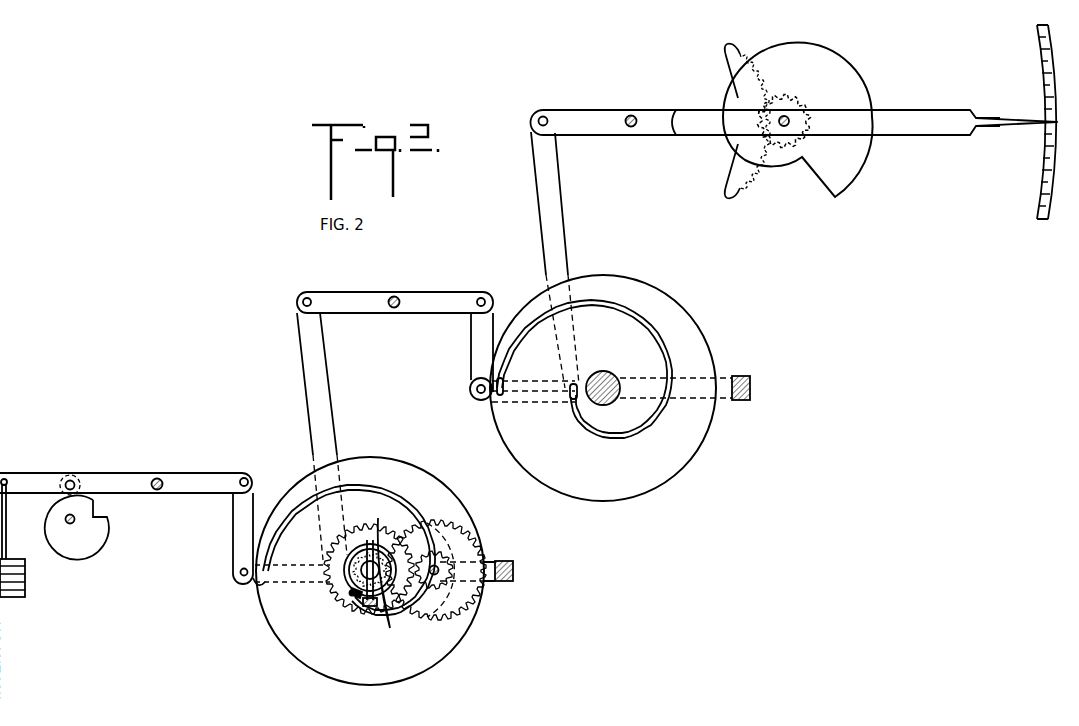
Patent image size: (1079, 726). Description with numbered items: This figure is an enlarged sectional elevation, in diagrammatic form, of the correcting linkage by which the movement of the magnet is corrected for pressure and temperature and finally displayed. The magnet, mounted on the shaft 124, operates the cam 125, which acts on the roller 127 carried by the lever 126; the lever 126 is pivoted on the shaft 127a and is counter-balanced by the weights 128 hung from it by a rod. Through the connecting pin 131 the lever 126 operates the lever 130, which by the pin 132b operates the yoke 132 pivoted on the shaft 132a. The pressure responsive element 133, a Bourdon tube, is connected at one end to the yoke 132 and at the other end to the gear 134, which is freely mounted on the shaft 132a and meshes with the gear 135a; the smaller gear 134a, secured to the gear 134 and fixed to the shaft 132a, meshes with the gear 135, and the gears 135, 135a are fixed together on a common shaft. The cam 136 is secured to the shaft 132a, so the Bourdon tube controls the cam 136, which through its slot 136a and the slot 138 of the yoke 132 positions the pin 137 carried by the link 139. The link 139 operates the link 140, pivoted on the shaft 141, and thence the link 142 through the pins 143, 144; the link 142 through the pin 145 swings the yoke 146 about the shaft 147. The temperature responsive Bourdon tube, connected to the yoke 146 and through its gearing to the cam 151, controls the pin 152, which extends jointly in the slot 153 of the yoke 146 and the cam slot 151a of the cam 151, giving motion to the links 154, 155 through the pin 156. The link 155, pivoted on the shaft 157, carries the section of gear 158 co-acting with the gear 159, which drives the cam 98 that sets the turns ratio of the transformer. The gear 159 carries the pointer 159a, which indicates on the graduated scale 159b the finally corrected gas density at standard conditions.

The cam 98 is at (856, 160).
The shaft 124 is at (68, 524).
The cam 125 is at (87, 546).
The lever 126 is at (115, 474).
The roller 127 is at (74, 474).
The shaft 127a is at (163, 478).
The weights 128 is at (12, 590).
The lever 130 is at (235, 523).
The connecting pin 131 is at (244, 477).
The yoke 132 is at (504, 563).
The shaft 132a is at (385, 526).
The pin 132b is at (240, 573).
The pressure responsive element 133 is at (404, 622).
The gear 134 is at (350, 537).
The smaller gear 134a is at (368, 610).
The gear 135 is at (452, 526).
The gear 135a is at (441, 592).
The cam 136 is at (425, 650).
The slot 136a is at (424, 502).
The pin 137 is at (336, 600).
The slot 138 is at (283, 584).
The link 139 is at (326, 426).
The link 140 is at (355, 291).
The shaft 141 is at (400, 298).
The link 142 is at (470, 333).
The pin 143 is at (304, 299).
The pin 144 is at (484, 298).
The pin 145 is at (473, 396).
The yoke 146 is at (478, 401).
The shaft 147 is at (607, 381).
The cam 151 is at (637, 488).
The cam slot 151a is at (648, 320).
The pin 152 is at (569, 400).
The slot 153 is at (507, 403).
The link 154 is at (553, 212).
The link 155 is at (592, 110).
The pin 156 is at (543, 116).
The shaft 157 is at (637, 117).
The section of gear 158 is at (724, 48).
The gear 159 is at (793, 96).
The pointer 159a is at (1020, 120).
The graduated scale 159b is at (1044, 144).